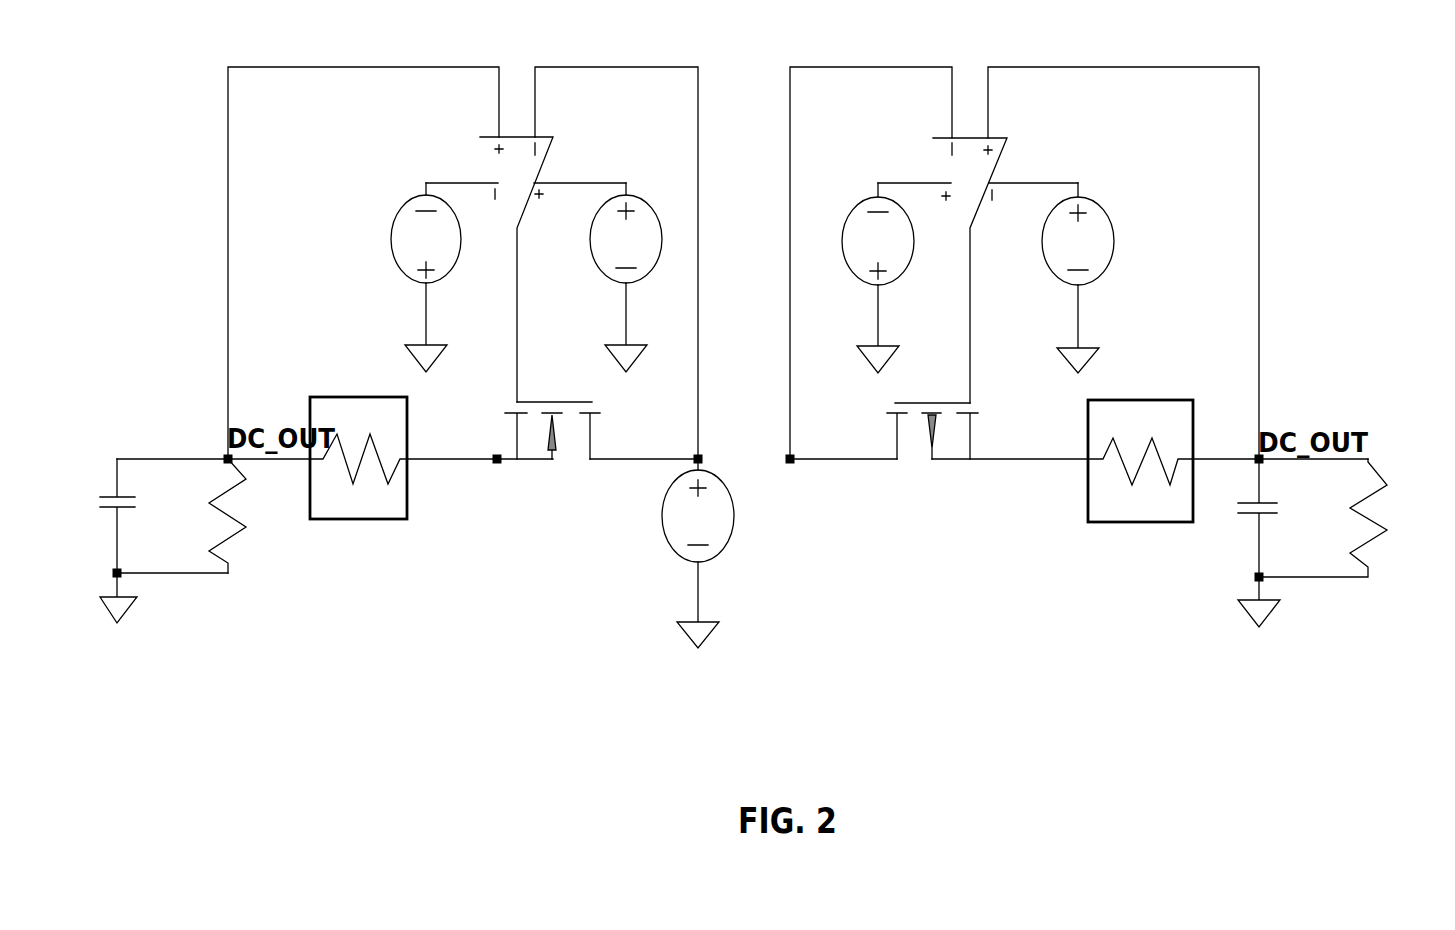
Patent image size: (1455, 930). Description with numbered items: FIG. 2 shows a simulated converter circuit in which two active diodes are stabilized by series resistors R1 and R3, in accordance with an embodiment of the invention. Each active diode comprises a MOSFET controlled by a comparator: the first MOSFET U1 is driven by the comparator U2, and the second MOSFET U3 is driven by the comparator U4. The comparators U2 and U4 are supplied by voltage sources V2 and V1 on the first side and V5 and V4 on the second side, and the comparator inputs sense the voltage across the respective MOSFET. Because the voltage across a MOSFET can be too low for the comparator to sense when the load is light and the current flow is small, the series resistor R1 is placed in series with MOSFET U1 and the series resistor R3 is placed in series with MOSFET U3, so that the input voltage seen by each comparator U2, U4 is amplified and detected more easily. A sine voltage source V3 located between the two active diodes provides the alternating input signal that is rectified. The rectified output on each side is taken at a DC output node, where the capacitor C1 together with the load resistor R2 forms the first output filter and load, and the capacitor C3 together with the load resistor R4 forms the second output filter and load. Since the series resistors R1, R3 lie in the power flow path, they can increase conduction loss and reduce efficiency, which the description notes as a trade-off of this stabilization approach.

The comparator MAX9119 U2 is at (526, 269).
The voltage source V2 is at (413, 265).
The voltage source V1 is at (641, 272).
The MOSFET SI1450DH U1 is at (552, 517).
The sine voltage source V3 is at (654, 547).
The series resistor R1 is at (358, 458).
The load resistor R2 is at (267, 516).
The capacitor C1 is at (164, 540).
The comparator MAX9119 U4 is at (978, 270).
The voltage source V5 is at (865, 266).
The voltage source V4 is at (1093, 272).
The MOSFET SI1499DH U3 is at (932, 518).
The series resistor R3 is at (1140, 461).
The capacitor C3 is at (1290, 543).
The load resistor R4 is at (1357, 518).